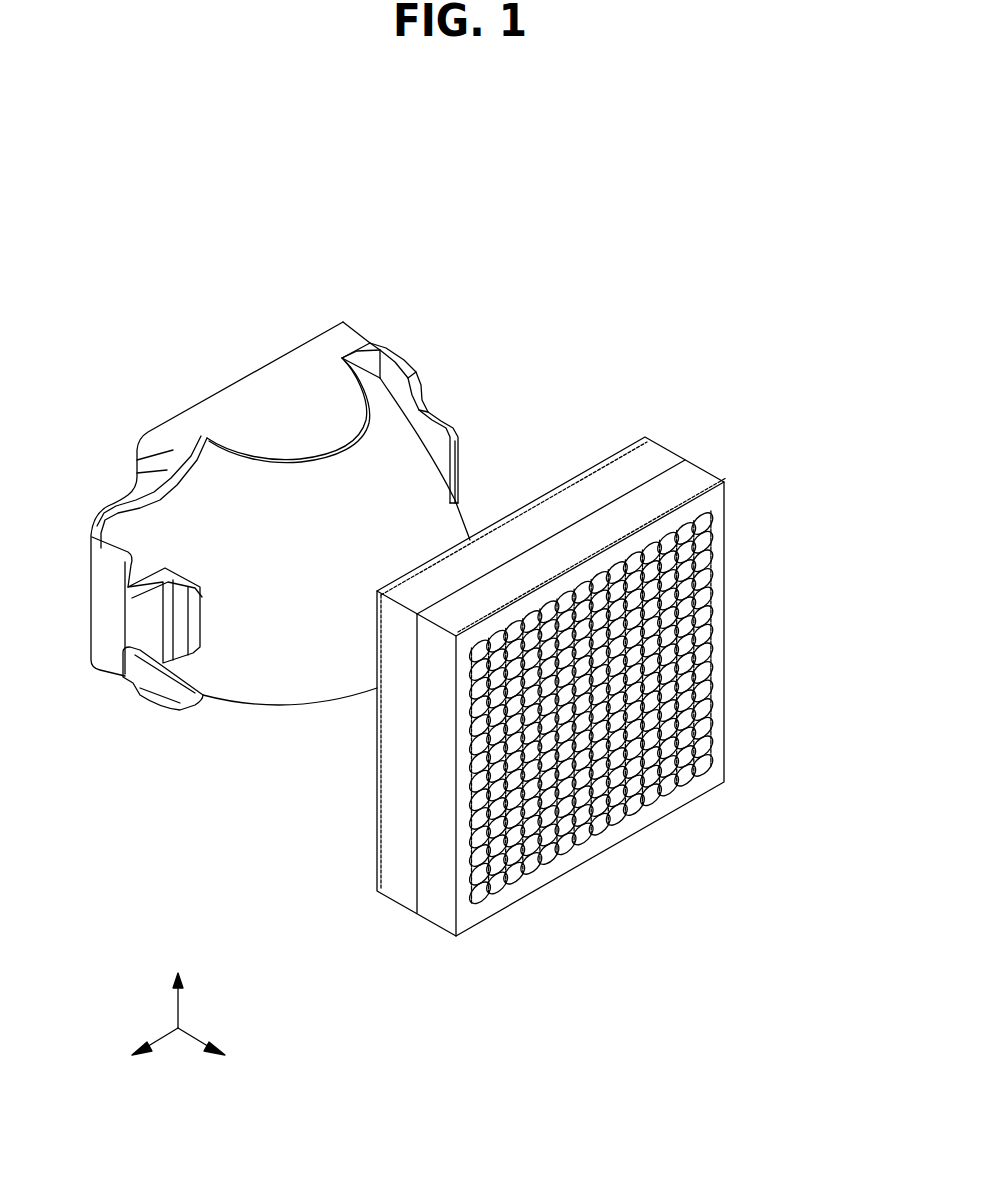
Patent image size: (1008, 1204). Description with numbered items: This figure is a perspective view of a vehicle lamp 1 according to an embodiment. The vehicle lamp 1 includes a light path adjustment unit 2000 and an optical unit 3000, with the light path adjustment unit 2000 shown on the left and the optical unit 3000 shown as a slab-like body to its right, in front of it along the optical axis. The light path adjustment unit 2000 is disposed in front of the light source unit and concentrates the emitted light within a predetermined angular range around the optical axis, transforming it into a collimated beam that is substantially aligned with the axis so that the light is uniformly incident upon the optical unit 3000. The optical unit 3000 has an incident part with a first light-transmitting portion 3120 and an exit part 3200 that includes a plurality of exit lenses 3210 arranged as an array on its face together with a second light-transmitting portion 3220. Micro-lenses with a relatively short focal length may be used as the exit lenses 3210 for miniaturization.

The vehicle lamp 1 is at (580, 226).
The light path adjustment unit 2000 is at (165, 760).
The optical unit 3000 is at (405, 935).
The first light-transmitting portion 3120 is at (658, 447).
The exit part 3200 is at (788, 447).
The exit lenses 3210 is at (703, 522).
The second light-transmitting portion 3220 is at (693, 475).